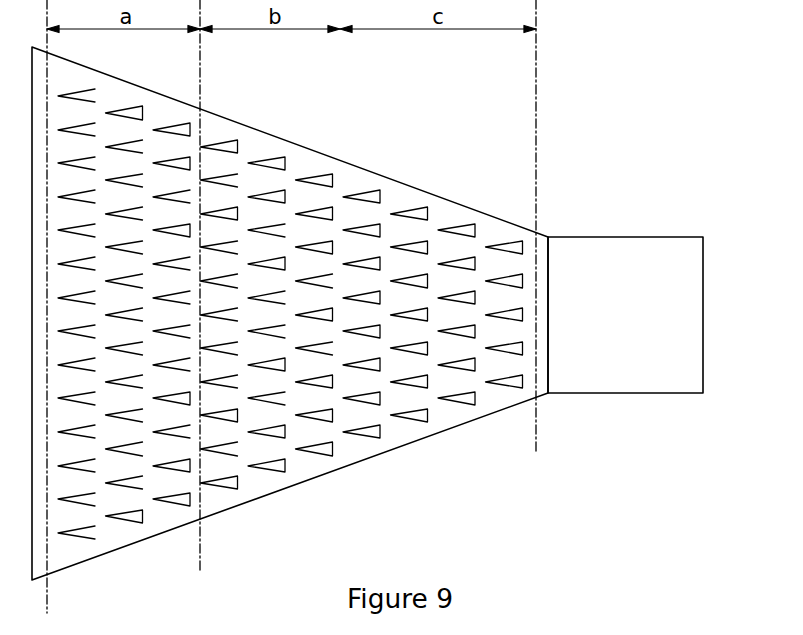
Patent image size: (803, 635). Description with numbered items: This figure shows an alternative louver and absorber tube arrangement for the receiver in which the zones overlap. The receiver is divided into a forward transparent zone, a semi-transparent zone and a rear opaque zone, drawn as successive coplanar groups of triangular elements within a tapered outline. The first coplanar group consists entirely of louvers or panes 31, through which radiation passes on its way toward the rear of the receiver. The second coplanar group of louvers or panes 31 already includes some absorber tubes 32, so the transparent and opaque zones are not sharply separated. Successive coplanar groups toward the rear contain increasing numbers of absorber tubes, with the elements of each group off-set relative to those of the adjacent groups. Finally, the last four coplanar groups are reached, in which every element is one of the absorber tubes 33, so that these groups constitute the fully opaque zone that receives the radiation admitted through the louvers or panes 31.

The louvers or panes 31 is at (133, 478).
The absorber tubes 32 is at (138, 516).
The absorber tubes 33 is at (515, 386).